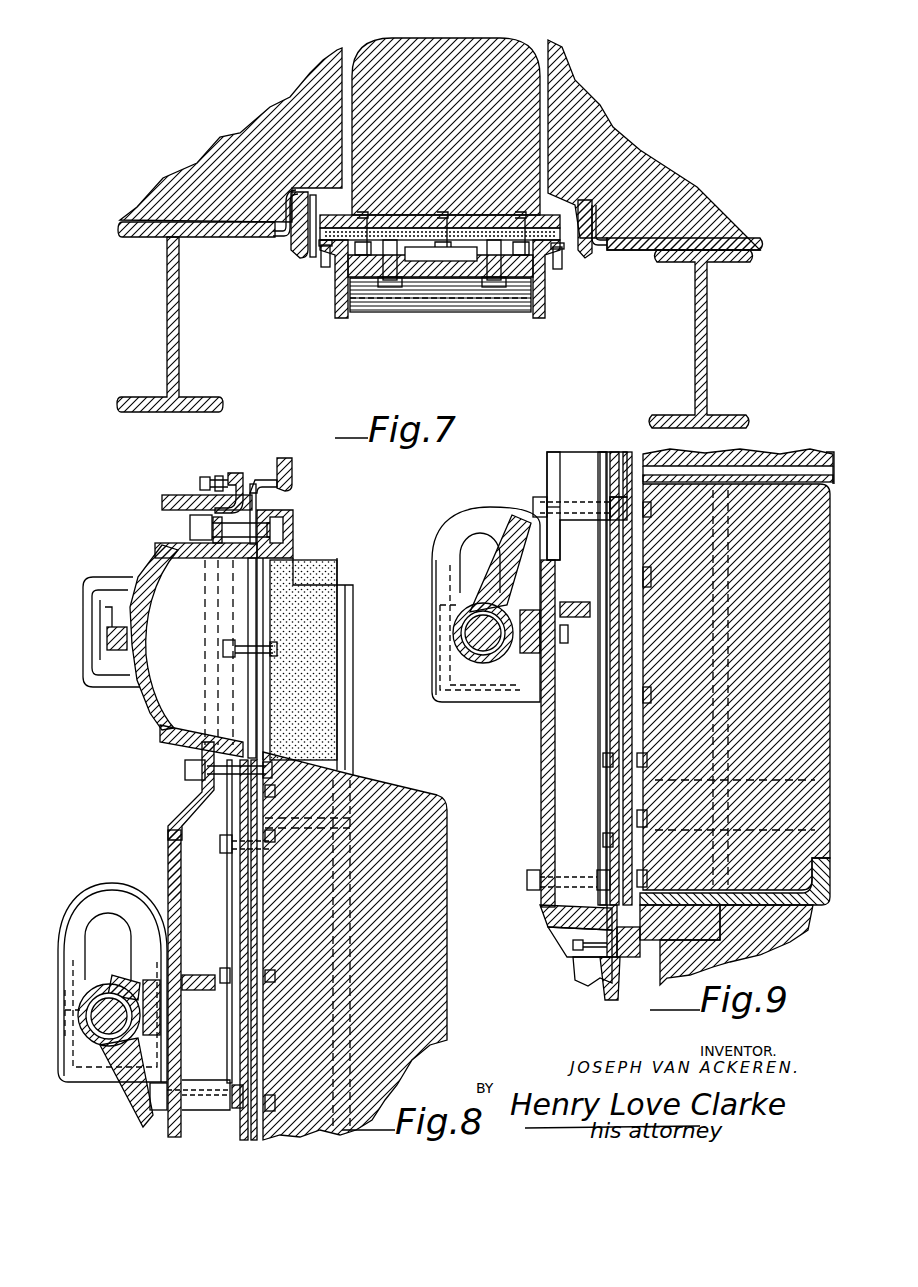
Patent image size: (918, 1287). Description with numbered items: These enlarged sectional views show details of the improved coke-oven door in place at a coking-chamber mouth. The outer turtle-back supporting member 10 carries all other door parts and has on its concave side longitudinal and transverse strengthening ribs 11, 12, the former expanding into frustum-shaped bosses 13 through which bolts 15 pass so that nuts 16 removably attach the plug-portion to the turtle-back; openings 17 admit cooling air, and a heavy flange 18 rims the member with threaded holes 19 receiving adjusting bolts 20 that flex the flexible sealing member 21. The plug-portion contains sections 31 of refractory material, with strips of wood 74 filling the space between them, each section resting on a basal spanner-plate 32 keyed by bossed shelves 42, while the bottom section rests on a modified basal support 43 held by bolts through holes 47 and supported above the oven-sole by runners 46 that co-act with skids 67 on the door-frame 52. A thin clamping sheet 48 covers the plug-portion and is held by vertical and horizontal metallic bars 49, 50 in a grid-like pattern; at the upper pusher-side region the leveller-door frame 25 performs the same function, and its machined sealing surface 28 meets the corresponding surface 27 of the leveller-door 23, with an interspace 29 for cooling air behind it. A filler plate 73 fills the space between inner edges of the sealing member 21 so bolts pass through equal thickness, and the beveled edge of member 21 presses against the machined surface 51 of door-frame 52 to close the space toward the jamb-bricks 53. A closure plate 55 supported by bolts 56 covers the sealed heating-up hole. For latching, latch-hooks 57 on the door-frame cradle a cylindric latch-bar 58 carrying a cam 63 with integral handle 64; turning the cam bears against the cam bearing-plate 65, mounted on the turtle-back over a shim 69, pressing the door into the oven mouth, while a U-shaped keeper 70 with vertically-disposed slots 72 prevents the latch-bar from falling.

In FIG. 7, the turtle-back supporting member 10 is at (547, 293).
In FIG. 8, the turtle-back supporting member 10 is at (168, 882).
In FIG. 8, the longitudinal strengthening ribs 11 is at (170, 872).
In FIG. 9, the longitudinal strengthening ribs 11 is at (590, 462).
In FIG. 8, the transverse strengthening ribs 12 is at (200, 975).
In FIG. 9, the transverse strengthening ribs 12 is at (580, 617).
In FIG. 8, the frustum-shaped bosses 13 is at (200, 1067).
In FIG. 9, the frustum-shaped bosses 13 is at (585, 495).
In FIG. 9, the bolts 15 is at (533, 507).
In FIG. 7, the nuts 16 is at (403, 282).
In FIG. 9, the nuts 16 is at (540, 497).
In FIG. 8, the openings 17 is at (182, 1057).
In FIG. 9, the openings 17 is at (560, 545).
In FIG. 8, the heavy flange 18 is at (219, 474).
In FIG. 8, the threaded holes 19 is at (238, 472).
In FIG. 7, the adjusting bolt 20 is at (322, 266).
In FIG. 8, the adjusting bolt 20 is at (205, 476).
In FIG. 9, the adjusting bolt 20 is at (573, 945).
In FIG. 7, the flexible sealing member 21 is at (312, 257).
In FIG. 8, the flexible sealing member 21 is at (258, 480).
In FIG. 9, the flexible sealing member 21 is at (605, 975).
In FIG. 8, the leveller-door 23 is at (135, 714).
In FIG. 8, the leveller-door frame 25 is at (168, 745).
In FIG. 8, the machined sealing surface of leveller-door 27 is at (158, 548).
In FIG. 8, the machined sealing surface of leveller-door frame 28 is at (189, 534).
In FIG. 7, the interspace 29 is at (467, 262).
In FIG. 8, the interspace 29 is at (218, 790).
In FIG. 7, the refractory sections 31 is at (458, 46).
In FIG. 8, the refractory sections 31 is at (448, 838).
In FIG. 9, the refractory sections 31 is at (785, 490).
In FIG. 9, the basal spanner-plate 32 is at (760, 478).
In FIG. 9, the bossed shelves 42 is at (672, 460).
In FIG. 9, the basal support 43 is at (825, 905).
In FIG. 9, the runners 46 is at (567, 955).
In FIG. 9, the holes 47 is at (541, 912).
In FIG. 7, the clamping sheet 48 is at (378, 275).
In FIG. 8, the clamping sheet 48 is at (243, 896).
In FIG. 9, the clamping sheet 48 is at (610, 728).
In FIG. 8, the vertical metallic bars 49 is at (251, 917).
In FIG. 9, the vertical metallic bars 49 is at (623, 661).
In FIG. 8, the horizontal metallic bars 50 is at (232, 1100).
In FIG. 9, the horizontal metallic bars 50 is at (610, 510).
In FIG. 7, the machined surface 51 is at (285, 240).
In FIG. 8, the machined surface 51 is at (292, 488).
In FIG. 9, the machined surface 51 is at (612, 980).
In FIG. 7, the door-frame 52 is at (288, 247).
In FIG. 8, the door-frame 52 is at (294, 466).
In FIG. 9, the door-frame 52 is at (665, 940).
In FIG. 7, the jamb-bricks 53 is at (224, 160).
In FIG. 9, the closure plate 55 is at (603, 797).
In FIG. 9, the bolts 56 is at (603, 843).
In FIG. 8, the latch-hooks 57 is at (73, 978).
In FIG. 9, the latch-hooks 57 is at (440, 607).
In FIG. 8, the latch-bar 58 is at (95, 1025).
In FIG. 9, the latch-bar 58 is at (465, 633).
In FIG. 8, the cam 63 is at (108, 978).
In FIG. 9, the cam 63 is at (500, 660).
In FIG. 8, the handle 64 is at (130, 1110).
In FIG. 9, the handle 64 is at (513, 528).
In FIG. 8, the cam bearing-plate 65 is at (145, 990).
In FIG. 9, the cam bearing-plate 65 is at (530, 655).
In FIG. 9, the skids 67 is at (575, 980).
In FIG. 8, the shim 69 is at (185, 1030).
In FIG. 9, the shim 69 is at (560, 655).
In FIG. 8, the keeper 70 is at (85, 913).
In FIG. 9, the keeper 70 is at (445, 558).
In FIG. 8, the vertically-disposed slots 72 is at (108, 912).
In FIG. 9, the vertically-disposed slots 72 is at (480, 548).
In FIG. 7, the filler plate 73 is at (406, 224).
In FIG. 8, the filler plate 73 is at (340, 790).
In FIG. 9, the strips of wood 74 is at (826, 470).